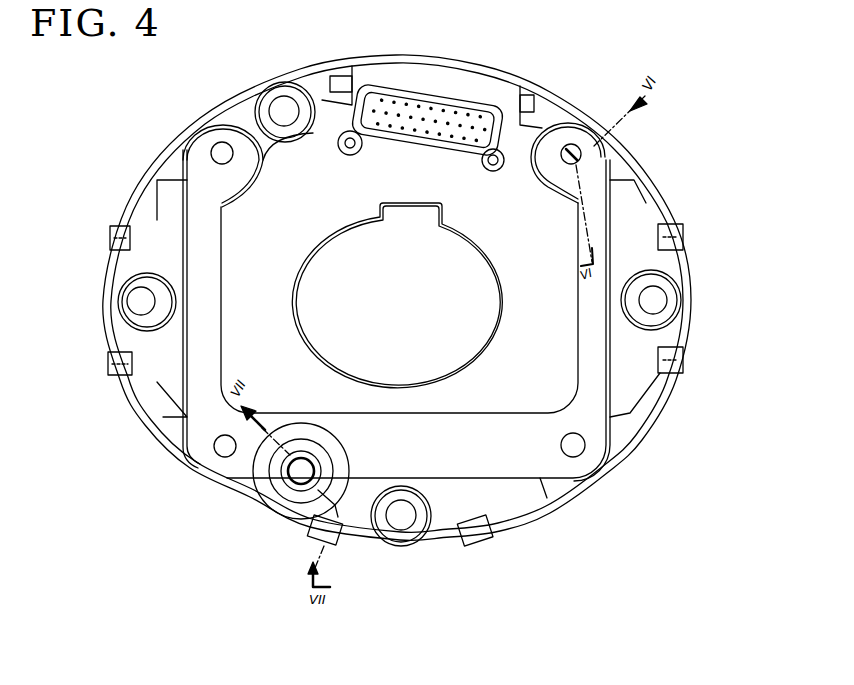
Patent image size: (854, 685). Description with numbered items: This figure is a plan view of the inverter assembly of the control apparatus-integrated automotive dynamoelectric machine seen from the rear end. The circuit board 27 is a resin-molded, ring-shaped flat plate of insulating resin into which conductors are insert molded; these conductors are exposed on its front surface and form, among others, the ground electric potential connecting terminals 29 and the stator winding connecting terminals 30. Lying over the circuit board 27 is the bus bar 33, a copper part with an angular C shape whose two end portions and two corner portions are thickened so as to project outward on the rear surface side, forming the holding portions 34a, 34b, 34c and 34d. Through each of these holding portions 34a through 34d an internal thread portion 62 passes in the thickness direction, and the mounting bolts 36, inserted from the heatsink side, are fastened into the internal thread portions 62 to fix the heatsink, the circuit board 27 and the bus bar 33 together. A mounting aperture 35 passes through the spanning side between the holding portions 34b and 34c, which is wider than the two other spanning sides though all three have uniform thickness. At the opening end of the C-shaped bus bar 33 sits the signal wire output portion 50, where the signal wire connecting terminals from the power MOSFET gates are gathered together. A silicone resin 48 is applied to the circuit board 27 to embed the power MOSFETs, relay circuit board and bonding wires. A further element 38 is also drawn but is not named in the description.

The circuit board 27 is at (664, 190).
The ground electric potential connecting terminals 29 is at (262, 100).
The stator winding connecting terminals 30 is at (110, 238).
The bus bar 33 is at (181, 205).
The holding portion 34a is at (198, 152).
The holding portion 34b is at (204, 447).
The holding portion 34c is at (593, 445).
The holding portion 34d is at (596, 153).
The mounting aperture 35 is at (284, 483).
The mounting bolts 36 is at (219, 150).
The inner ring 38 is at (288, 475).
The silicone resin 48 is at (160, 384).
The signal wire output portion 50 is at (464, 102).
The internal thread portions 62 is at (574, 146).